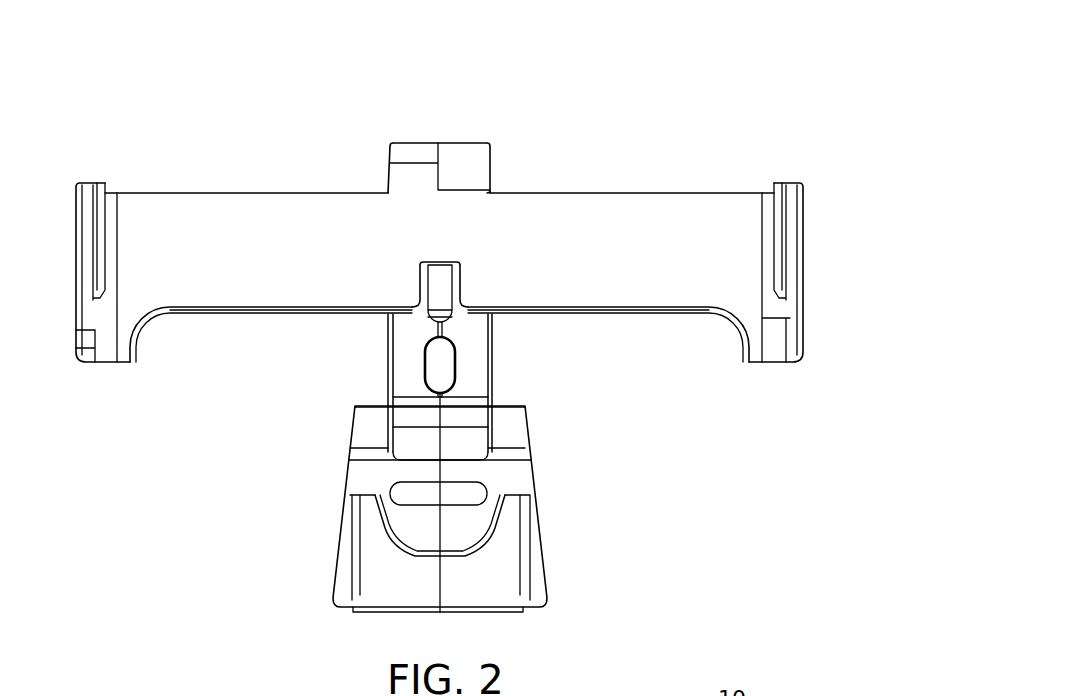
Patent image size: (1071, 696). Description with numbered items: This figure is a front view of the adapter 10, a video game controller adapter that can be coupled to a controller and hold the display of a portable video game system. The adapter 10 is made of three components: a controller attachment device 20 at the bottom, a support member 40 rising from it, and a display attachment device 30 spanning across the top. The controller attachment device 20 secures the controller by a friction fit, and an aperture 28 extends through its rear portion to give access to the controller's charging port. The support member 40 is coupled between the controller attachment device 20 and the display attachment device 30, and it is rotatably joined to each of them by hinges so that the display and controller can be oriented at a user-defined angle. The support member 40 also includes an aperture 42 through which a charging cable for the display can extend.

The adapter 10 is at (646, 78).
The controller attachment device 20 is at (578, 556).
The aperture 28 is at (423, 495).
The display attachment device 30 is at (678, 172).
The support member 40 is at (524, 361).
The aperture 42 is at (440, 363).